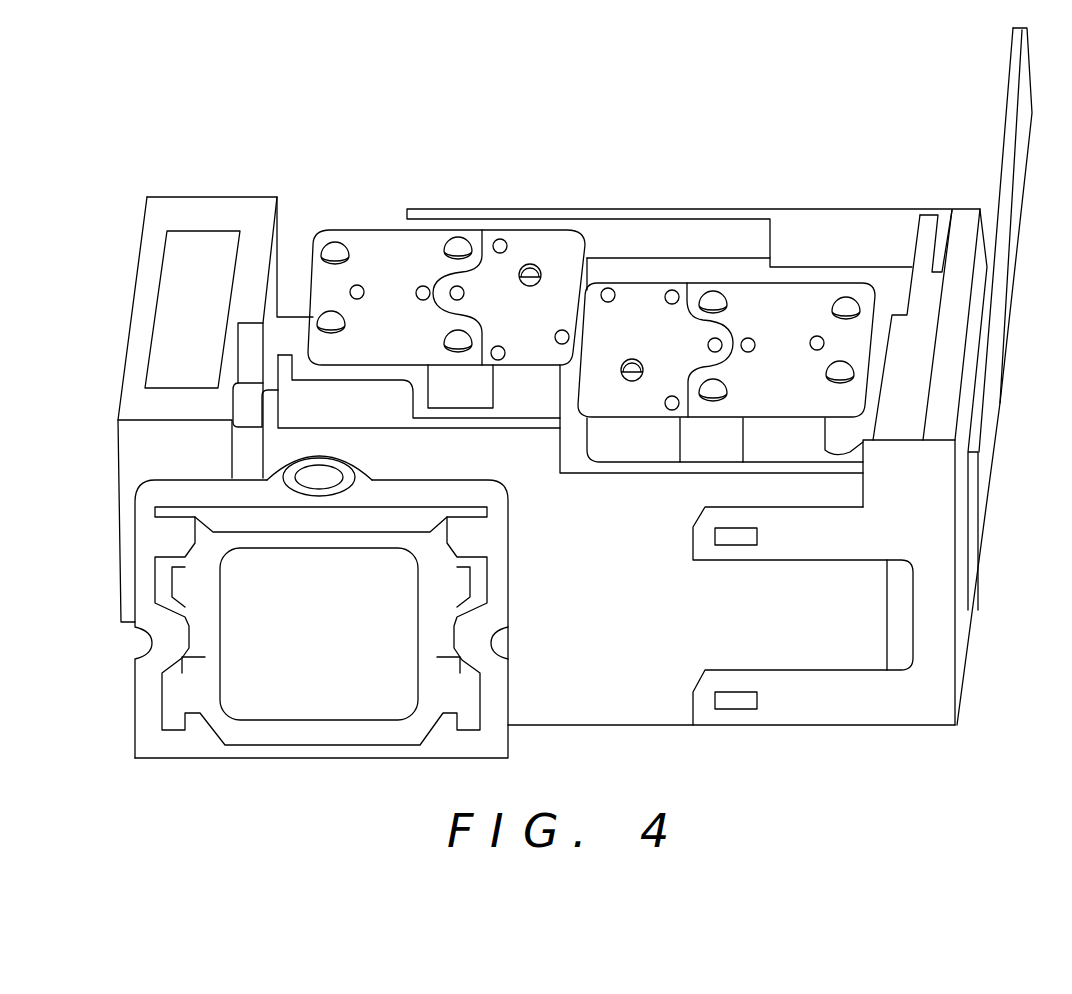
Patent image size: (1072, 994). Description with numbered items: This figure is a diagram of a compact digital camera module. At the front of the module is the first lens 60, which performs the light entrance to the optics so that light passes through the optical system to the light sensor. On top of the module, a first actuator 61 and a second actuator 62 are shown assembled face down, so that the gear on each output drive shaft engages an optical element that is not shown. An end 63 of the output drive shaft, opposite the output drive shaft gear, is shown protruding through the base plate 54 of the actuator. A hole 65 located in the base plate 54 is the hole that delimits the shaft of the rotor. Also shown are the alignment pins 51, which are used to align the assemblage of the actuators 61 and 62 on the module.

The alignment pins 51 is at (333, 245).
The first actuator 61 is at (446, 254).
The hole 65 is at (457, 293).
The end of the output drive shaft 63 is at (530, 264).
The base plate 54 is at (585, 240).
The second actuator 62 is at (712, 283).
The first lens 60 is at (273, 720).